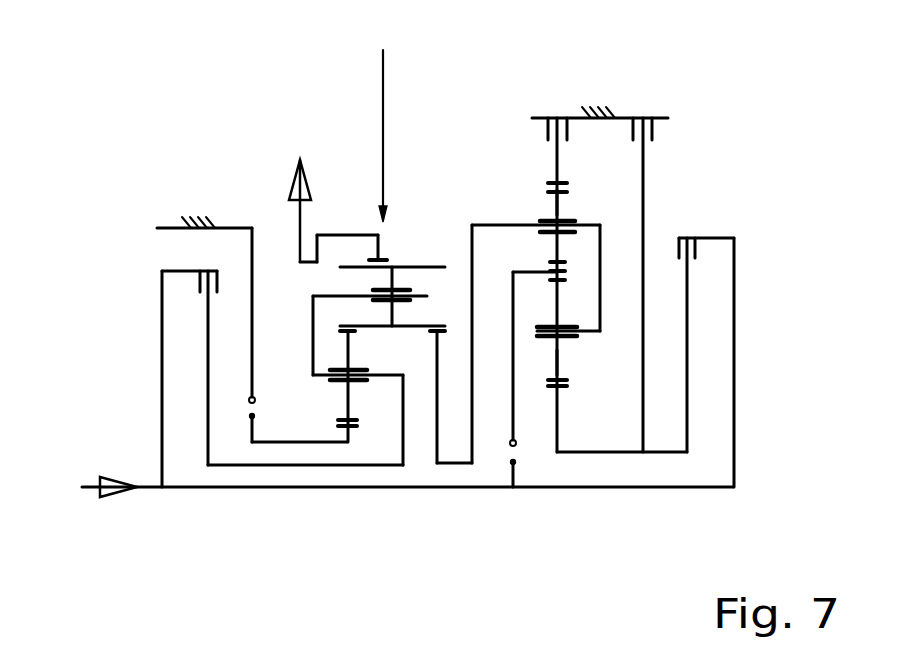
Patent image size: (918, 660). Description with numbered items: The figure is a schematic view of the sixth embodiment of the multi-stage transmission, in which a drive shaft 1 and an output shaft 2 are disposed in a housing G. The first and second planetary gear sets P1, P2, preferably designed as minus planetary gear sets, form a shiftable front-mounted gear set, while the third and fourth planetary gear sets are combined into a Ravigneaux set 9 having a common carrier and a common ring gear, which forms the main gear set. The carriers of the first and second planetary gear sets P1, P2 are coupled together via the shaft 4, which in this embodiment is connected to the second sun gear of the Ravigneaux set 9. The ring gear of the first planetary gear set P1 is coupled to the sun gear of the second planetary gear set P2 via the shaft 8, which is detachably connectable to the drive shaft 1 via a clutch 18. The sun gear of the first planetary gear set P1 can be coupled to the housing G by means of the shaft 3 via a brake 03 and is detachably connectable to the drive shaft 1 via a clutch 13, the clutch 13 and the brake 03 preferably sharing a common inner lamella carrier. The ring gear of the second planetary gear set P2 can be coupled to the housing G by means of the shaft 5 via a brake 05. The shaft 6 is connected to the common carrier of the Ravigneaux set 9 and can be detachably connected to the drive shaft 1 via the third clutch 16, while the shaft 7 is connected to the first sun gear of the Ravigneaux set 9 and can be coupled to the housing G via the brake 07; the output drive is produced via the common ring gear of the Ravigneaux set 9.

The drive shaft 1 is at (390, 488).
The output shaft 2 is at (353, 264).
The shaft 3 is at (558, 432).
The shaft 4 is at (590, 225).
The shaft 5 is at (555, 175).
The shaft 6 is at (345, 297).
The shaft 7 is at (330, 444).
The shaft 8 is at (537, 272).
The Ravigneaux set 9 is at (381, 118).
The clutch 13 is at (690, 238).
The third clutch 16 is at (197, 282).
The clutch 18 is at (516, 456).
The brake 03 is at (643, 125).
The brake 05 is at (557, 178).
The brake 07 is at (250, 420).
The housing G is at (197, 222).
The first planetary gear set P1 is at (582, 364).
The second planetary gear set P2 is at (578, 200).